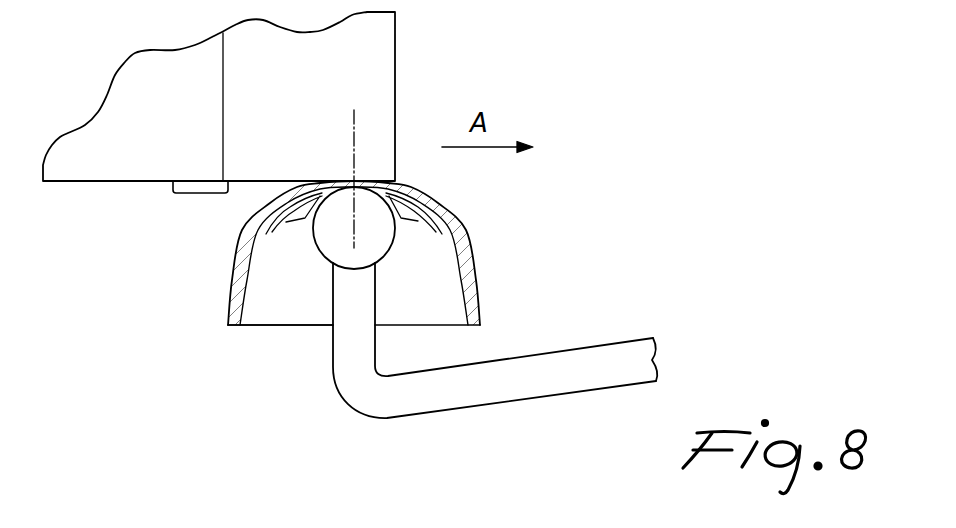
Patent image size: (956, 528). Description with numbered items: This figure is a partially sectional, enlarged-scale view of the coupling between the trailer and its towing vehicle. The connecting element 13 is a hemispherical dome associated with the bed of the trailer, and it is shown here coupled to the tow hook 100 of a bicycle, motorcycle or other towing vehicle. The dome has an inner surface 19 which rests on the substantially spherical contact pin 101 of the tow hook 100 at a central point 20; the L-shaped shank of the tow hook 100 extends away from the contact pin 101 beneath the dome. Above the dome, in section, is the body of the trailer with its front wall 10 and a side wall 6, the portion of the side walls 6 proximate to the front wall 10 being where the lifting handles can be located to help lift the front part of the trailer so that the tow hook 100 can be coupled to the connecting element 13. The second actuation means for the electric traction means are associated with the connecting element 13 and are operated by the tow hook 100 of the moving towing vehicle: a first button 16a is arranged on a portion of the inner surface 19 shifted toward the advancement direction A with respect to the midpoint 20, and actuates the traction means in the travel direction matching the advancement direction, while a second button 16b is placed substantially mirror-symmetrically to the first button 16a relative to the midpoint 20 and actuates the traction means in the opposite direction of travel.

The side walls 6 is at (83, 170).
The front wall 10 is at (358, 62).
The connecting element 13 is at (454, 212).
The first button 16a is at (415, 215).
The second button 16b is at (293, 215).
The inner surface 19 is at (238, 293).
The central point 20 is at (353, 183).
The tow hook 100 is at (565, 378).
The contact pin 101 is at (332, 235).